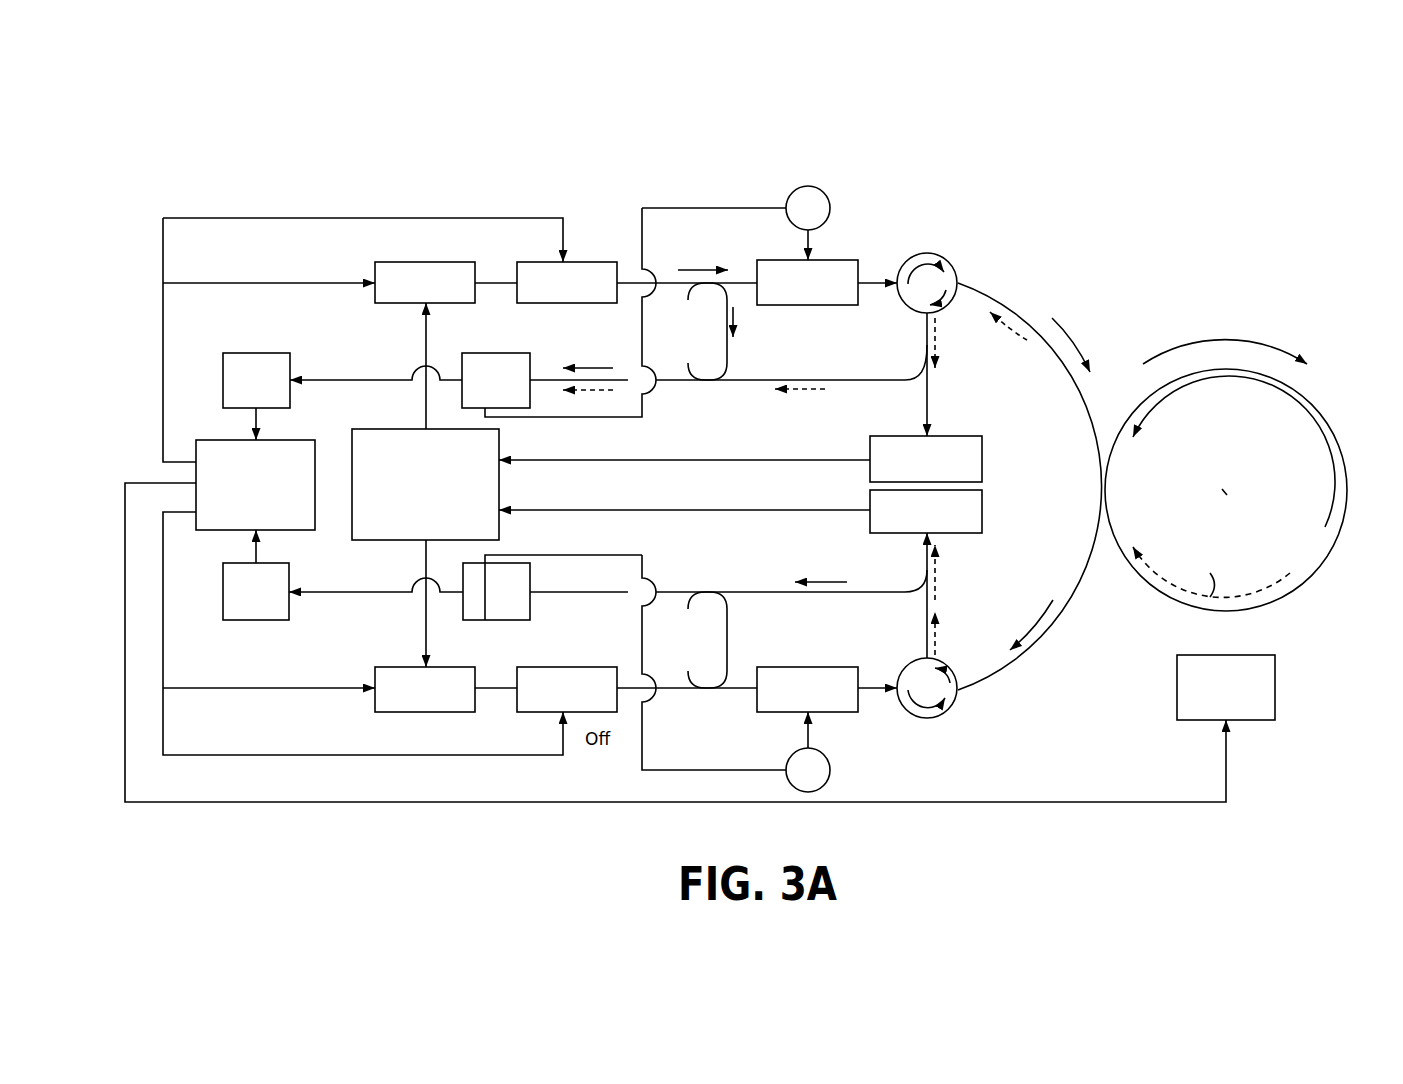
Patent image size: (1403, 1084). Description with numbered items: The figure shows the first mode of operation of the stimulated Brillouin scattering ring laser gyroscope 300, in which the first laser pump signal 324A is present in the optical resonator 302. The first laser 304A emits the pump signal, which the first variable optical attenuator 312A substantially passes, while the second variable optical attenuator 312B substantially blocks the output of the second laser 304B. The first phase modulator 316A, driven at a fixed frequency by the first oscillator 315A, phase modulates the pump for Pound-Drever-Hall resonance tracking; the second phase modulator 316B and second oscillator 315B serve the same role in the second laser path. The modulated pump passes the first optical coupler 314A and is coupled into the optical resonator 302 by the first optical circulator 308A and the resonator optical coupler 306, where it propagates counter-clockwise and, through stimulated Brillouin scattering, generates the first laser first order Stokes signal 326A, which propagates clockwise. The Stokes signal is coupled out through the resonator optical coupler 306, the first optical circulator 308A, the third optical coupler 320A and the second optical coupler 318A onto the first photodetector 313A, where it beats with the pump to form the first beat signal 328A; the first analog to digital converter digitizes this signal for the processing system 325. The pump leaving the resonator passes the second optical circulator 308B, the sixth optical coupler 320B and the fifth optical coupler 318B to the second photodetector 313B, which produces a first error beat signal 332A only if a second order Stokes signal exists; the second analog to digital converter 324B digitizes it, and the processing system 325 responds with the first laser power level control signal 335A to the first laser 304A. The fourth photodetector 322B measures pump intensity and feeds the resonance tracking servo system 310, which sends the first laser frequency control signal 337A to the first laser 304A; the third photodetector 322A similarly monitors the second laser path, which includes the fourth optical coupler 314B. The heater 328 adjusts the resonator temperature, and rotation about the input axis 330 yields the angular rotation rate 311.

The SBS ring laser gyroscope 300 is at (772, 124).
The optical resonator 302 is at (1345, 500).
The first laser 304A is at (412, 262).
The second laser 304B is at (400, 712).
The resonator optical coupler 306 is at (1030, 486).
The first optical circulator 308A is at (927, 259).
The second optical circulator 308B is at (927, 716).
The resonance tracking servo system 310 is at (441, 527).
The angular rotation rate 311 is at (1225, 333).
The first variable optical attenuator 312A is at (588, 303).
The second variable optical attenuator 312B is at (575, 667).
The first photodetector 313A is at (518, 400).
The second photodetector 313B is at (518, 610).
The first optical coupler 314A is at (688, 331).
The fourth optical coupler 314B is at (707, 667).
The first oscillator 315A is at (810, 186).
The second oscillator 315B is at (830, 778).
The first phase modulator 316A is at (828, 305).
The second phase modulator 316B is at (828, 667).
The second optical coupler 318A is at (717, 406).
The fifth optical coupler 318B is at (717, 567).
The third optical coupler 320A is at (892, 354).
The sixth optical coupler 320B is at (923, 618).
The third photodetector 322A is at (964, 469).
The fourth photodetector 322B is at (964, 521).
The first laser pump signal 324A is at (279, 400).
The second analog to digital converter 324B is at (278, 610).
The processing system 325 is at (273, 515).
The first laser first order Stokes signal 326A is at (1206, 543).
The heater 328 is at (1243, 709).
The first beat signal 328A is at (327, 339).
The input axis 330 is at (1258, 543).
The first error beat signal 332A is at (323, 626).
The first laser power level control signal 335A is at (275, 283).
The first laser frequency control signal 337A is at (428, 355).